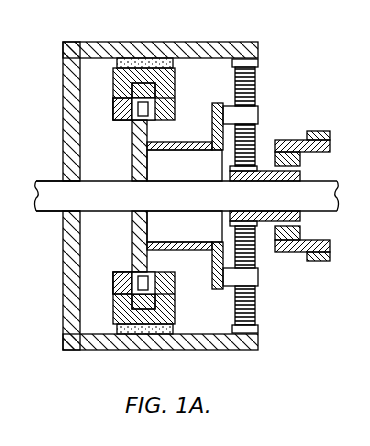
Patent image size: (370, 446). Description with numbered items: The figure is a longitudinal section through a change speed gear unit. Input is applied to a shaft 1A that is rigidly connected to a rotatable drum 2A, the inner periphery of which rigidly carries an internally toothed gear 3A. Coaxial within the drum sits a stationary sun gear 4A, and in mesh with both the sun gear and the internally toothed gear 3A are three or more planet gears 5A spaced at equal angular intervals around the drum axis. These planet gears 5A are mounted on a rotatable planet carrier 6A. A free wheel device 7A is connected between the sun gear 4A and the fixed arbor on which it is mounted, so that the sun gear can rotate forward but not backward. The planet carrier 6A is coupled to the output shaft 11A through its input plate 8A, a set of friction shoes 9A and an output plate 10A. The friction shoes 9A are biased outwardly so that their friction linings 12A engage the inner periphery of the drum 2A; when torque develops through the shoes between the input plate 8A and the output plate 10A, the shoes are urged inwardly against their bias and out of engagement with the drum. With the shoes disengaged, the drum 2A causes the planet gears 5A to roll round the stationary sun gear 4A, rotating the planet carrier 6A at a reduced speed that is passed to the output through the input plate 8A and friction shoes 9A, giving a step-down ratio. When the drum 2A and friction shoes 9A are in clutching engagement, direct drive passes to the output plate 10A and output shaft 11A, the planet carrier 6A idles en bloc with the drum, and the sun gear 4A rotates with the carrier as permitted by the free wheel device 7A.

The shaft 1A is at (41, 182).
The rotatable drum 2A is at (197, 43).
The internally toothed gear 3A is at (258, 63).
The stationary sun gear 4A is at (223, 168).
The planet gears 5A is at (257, 90).
The rotatable planet carrier 6A is at (212, 127).
The free wheel device 7A is at (300, 240).
The input plate 8A is at (153, 142).
The friction shoes 9A is at (117, 102).
The output plate 10A is at (132, 163).
The output shaft 11A is at (273, 208).
The friction linings 12A is at (157, 62).